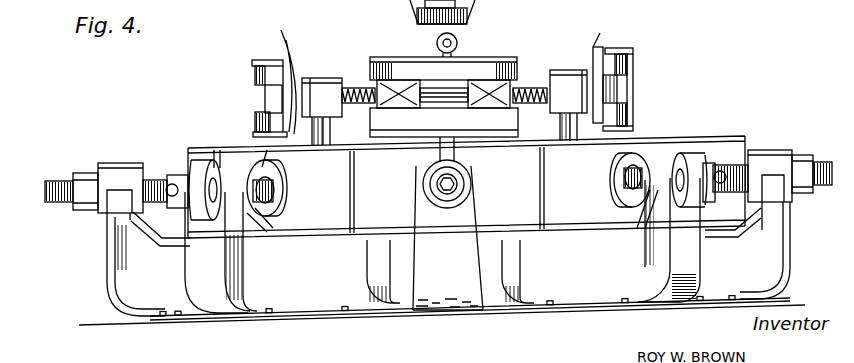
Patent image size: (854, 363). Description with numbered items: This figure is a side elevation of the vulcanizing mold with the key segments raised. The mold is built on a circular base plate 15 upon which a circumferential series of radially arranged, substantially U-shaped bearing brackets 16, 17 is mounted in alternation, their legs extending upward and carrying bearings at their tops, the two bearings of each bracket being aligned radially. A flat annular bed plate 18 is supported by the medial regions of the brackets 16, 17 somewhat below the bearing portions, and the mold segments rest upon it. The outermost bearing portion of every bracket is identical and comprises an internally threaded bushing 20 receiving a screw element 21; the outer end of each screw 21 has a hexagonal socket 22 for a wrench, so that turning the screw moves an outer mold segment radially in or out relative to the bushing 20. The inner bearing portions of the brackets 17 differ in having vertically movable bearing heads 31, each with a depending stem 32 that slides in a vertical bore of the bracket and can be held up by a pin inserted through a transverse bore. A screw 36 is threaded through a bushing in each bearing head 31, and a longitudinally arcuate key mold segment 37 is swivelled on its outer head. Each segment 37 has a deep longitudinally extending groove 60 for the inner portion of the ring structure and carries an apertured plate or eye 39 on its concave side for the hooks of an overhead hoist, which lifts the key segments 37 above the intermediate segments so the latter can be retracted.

The circular base plate 15 is at (227, 320).
The bearing bracket 16 is at (255, 295).
The bearing bracket 17 is at (115, 270).
The bed plate 18 is at (550, 232).
The internally threaded bushing 20 is at (97, 164).
The screw element 21 is at (825, 163).
The hexagonal socket 22 is at (171, 174).
The bearing head 31 is at (312, 78).
The stem 32 is at (333, 125).
The screw 36 is at (352, 87).
The mold segment 37 is at (366, 62).
The apertured plate 39 is at (288, 43).
The groove 60 is at (494, 58).